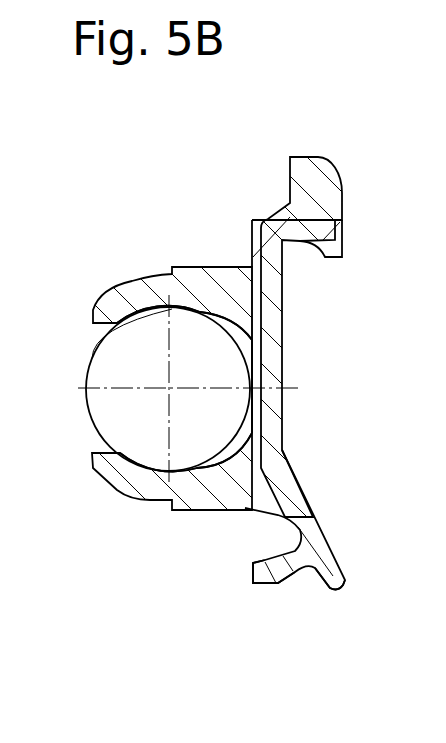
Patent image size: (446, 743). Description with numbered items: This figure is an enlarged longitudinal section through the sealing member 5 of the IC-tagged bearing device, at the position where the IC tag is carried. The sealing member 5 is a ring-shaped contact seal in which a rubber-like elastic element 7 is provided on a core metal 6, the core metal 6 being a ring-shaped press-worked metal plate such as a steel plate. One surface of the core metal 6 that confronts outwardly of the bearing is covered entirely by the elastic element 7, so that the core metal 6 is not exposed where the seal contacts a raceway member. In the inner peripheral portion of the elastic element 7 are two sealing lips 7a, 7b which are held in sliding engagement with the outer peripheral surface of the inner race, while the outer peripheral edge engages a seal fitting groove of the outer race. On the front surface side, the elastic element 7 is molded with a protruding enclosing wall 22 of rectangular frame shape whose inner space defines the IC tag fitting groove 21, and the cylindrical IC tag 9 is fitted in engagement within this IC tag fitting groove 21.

The sealing member 5 is at (244, 205).
The core metal 6 is at (283, 340).
The rubber-like elastic element 7 is at (318, 518).
The sealing lip 7a is at (263, 574).
The sealing lip 7b is at (337, 588).
The IC tag 9 is at (105, 415).
The IC tag fitting groove 21 is at (92, 359).
The enclosing wall 22 is at (172, 310).